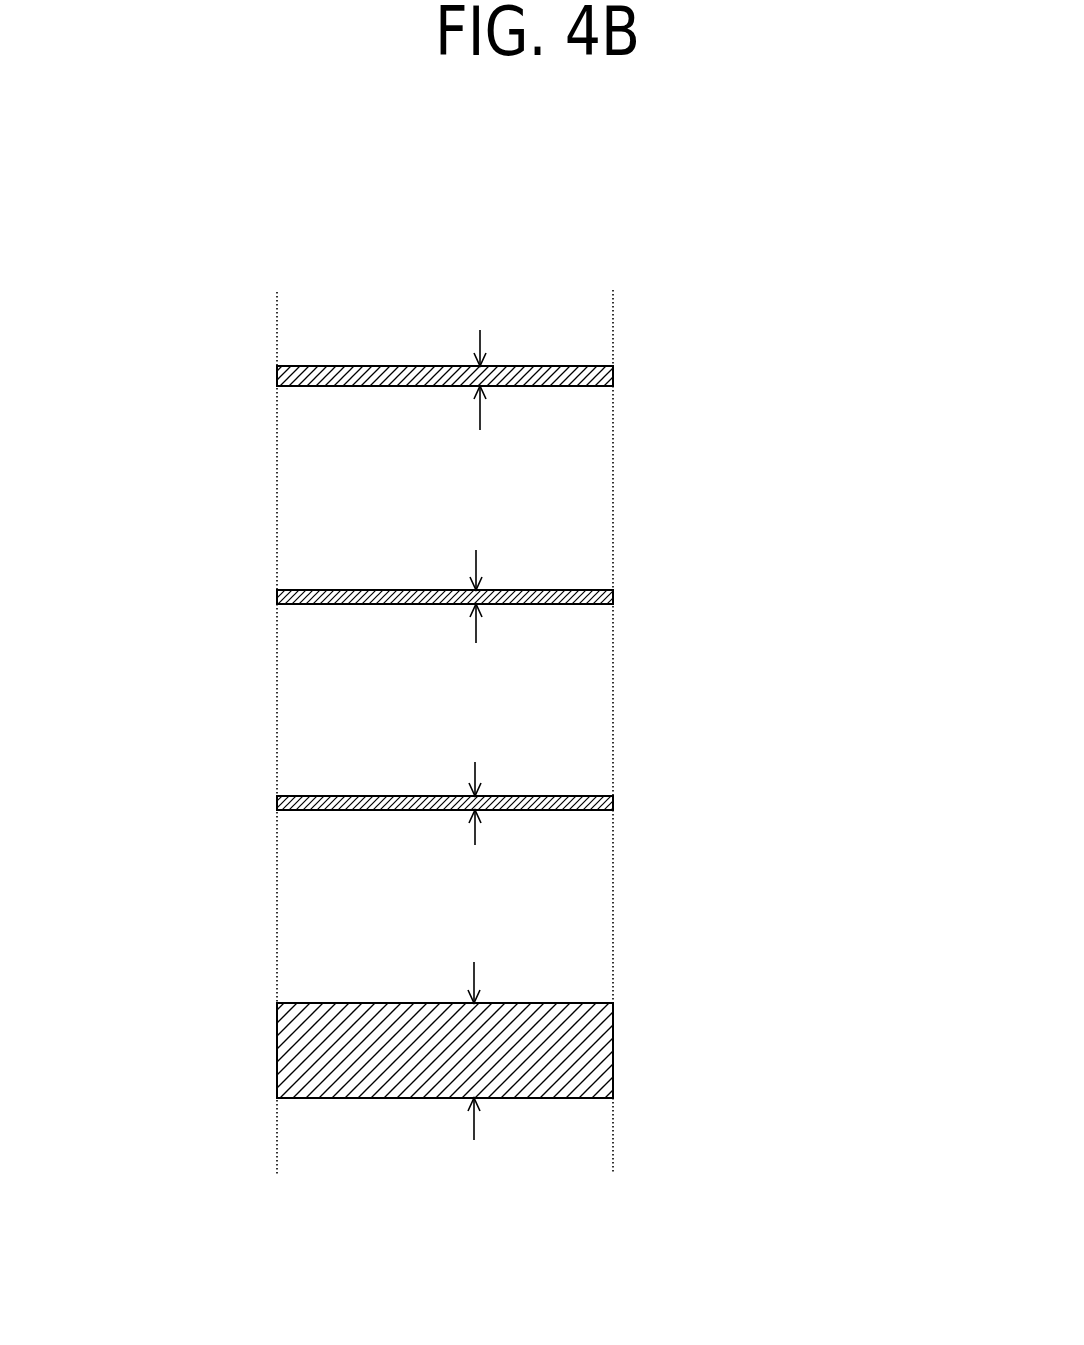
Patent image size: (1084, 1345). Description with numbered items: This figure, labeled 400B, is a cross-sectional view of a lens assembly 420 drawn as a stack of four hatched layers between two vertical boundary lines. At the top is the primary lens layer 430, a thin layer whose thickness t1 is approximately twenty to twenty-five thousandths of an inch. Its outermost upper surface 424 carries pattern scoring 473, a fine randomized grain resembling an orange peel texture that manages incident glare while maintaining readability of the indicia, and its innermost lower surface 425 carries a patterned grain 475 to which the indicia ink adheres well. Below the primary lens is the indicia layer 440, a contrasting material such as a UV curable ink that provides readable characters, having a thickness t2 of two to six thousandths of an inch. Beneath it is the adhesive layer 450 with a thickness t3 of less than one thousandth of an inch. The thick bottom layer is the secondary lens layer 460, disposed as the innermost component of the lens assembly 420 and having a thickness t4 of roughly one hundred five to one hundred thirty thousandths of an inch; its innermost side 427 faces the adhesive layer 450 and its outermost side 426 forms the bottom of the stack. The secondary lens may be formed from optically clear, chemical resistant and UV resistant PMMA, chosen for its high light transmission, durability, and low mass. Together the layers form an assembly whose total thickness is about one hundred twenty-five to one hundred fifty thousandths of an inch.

The cross-sectional stack view 400B is at (750, 180).
The lens assembly 420 is at (142, 430).
The primary lens layer 430 is at (275, 377).
The upper surface 424 is at (312, 368).
The lower surface 425 is at (308, 387).
The pattern scoring 473 is at (563, 367).
The patterned grain 475 is at (563, 387).
The indicia layer 440 is at (275, 598).
The adhesive layer 450 is at (275, 800).
The secondary lens layer 460 is at (276, 1050).
The innermost side 427 is at (316, 1003).
The outermost side 426 is at (317, 1099).
The thickness of primary lens t1 is at (482, 338).
The thickness of indicia layer t2 is at (480, 560).
The thickness of adhesive layer t3 is at (482, 775).
The thickness of secondary lens t4 is at (478, 973).